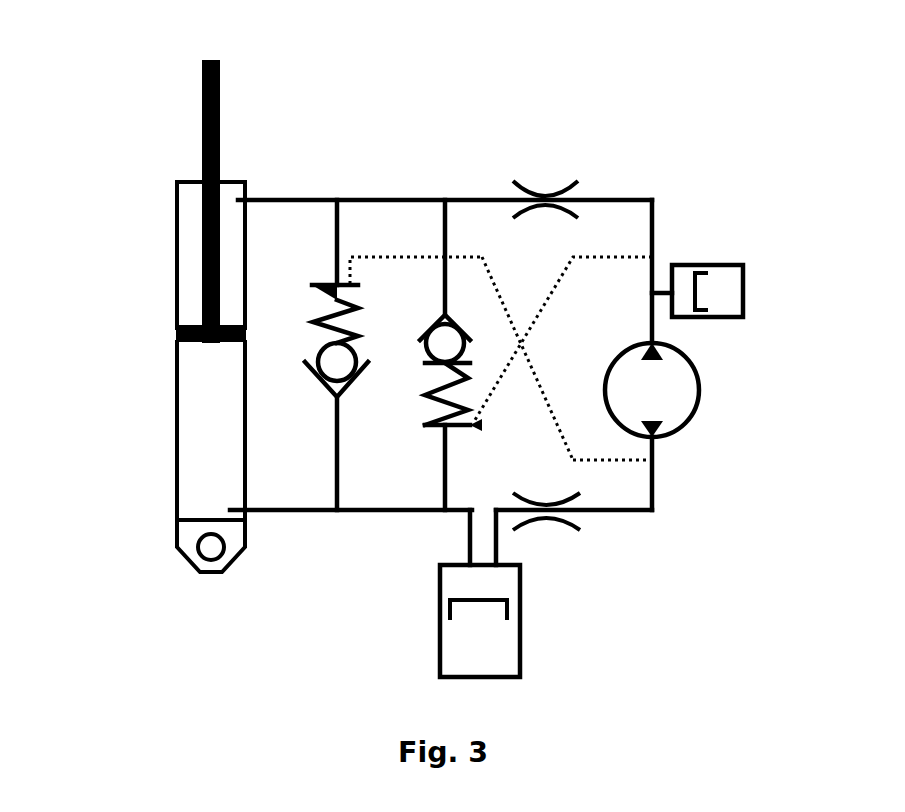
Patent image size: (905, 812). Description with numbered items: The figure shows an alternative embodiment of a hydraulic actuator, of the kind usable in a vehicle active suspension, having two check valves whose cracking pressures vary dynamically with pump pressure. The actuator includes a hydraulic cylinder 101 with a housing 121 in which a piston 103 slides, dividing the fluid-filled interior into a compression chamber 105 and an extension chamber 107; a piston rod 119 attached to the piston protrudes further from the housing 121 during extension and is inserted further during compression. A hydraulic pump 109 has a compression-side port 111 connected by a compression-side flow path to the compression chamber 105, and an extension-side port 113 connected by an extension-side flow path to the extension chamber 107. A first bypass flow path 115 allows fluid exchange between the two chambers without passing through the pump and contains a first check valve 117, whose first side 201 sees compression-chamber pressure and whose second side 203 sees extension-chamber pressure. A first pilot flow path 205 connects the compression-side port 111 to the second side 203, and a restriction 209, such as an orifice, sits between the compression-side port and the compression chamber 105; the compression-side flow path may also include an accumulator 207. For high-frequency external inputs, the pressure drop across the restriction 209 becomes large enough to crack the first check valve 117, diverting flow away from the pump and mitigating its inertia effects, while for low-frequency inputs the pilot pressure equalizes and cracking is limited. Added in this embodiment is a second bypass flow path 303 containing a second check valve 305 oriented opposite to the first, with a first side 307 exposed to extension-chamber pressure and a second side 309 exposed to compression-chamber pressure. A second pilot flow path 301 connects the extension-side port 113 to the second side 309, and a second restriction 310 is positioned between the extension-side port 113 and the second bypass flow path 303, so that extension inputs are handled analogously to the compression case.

The hydraulic cylinder 101 is at (160, 222).
The piston 103 is at (178, 342).
The compression chamber 105 is at (197, 465).
The extension chamber 107 is at (188, 276).
The hydraulic pump 109 is at (673, 400).
The compression-side port 111 is at (665, 432).
The extension-side port 113 is at (663, 359).
The first bypass flow path 115 is at (337, 510).
The first check valve 117 is at (360, 340).
The piston rod 119 is at (221, 72).
The housing 121 is at (175, 418).
The first side 201 is at (337, 407).
The second side 203 is at (350, 270).
The first pilot flow path 205 is at (617, 460).
The accumulator 207 is at (503, 627).
The restriction 209 is at (580, 530).
The second pilot flow path 301 is at (620, 253).
The second bypass flow path 303 is at (452, 228).
The second check valve 305 is at (538, 208).
The first side 307 is at (449, 305).
The second side 309 is at (447, 433).
The second restriction 310 is at (575, 191).